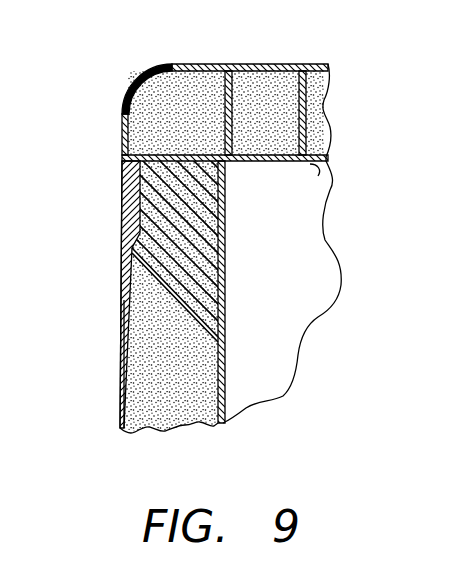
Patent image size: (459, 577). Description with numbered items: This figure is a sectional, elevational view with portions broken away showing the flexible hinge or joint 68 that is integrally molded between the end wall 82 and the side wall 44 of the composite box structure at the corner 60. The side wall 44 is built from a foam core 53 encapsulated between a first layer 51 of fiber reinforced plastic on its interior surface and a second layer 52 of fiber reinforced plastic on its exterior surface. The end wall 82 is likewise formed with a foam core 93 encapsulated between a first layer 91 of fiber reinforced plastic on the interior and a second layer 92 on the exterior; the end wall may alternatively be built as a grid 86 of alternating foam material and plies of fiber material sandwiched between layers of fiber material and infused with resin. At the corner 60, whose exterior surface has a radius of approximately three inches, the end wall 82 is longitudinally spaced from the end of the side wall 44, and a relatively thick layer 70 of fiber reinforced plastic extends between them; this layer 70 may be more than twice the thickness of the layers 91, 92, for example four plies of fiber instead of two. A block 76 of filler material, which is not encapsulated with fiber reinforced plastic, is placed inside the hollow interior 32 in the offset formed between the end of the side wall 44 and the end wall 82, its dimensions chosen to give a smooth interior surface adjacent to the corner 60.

The hollow interior 32 is at (296, 304).
The side wall 44 is at (113, 394).
The first layer of fiber reinforced plastic 51 is at (221, 418).
The second layer of fiber reinforced plastic 52 is at (121, 348).
The foam core 53 is at (153, 425).
The corner 60 is at (143, 84).
The flexible joint 68 is at (112, 226).
The layer of fiber reinforced plastic 70 is at (130, 173).
The block of filler material 76 is at (225, 228).
The end wall 82 is at (212, 65).
The grid 86 is at (257, 95).
The first layer of fiber reinforced plastic 91 is at (318, 172).
The second layer of fiber reinforced plastic 92 is at (268, 64).
The foam core 93 is at (329, 106).